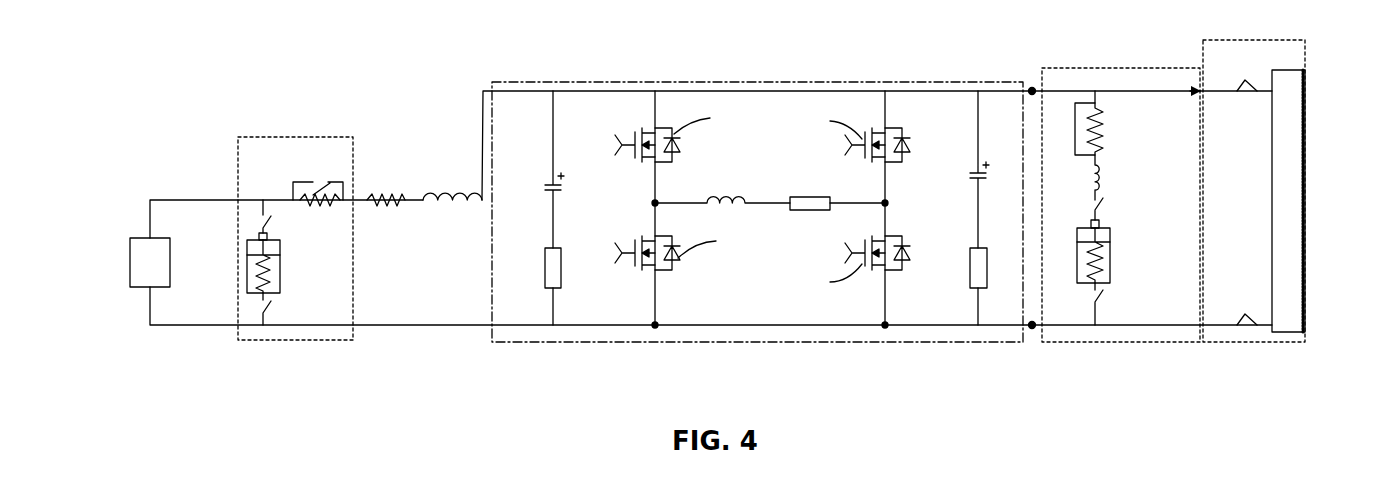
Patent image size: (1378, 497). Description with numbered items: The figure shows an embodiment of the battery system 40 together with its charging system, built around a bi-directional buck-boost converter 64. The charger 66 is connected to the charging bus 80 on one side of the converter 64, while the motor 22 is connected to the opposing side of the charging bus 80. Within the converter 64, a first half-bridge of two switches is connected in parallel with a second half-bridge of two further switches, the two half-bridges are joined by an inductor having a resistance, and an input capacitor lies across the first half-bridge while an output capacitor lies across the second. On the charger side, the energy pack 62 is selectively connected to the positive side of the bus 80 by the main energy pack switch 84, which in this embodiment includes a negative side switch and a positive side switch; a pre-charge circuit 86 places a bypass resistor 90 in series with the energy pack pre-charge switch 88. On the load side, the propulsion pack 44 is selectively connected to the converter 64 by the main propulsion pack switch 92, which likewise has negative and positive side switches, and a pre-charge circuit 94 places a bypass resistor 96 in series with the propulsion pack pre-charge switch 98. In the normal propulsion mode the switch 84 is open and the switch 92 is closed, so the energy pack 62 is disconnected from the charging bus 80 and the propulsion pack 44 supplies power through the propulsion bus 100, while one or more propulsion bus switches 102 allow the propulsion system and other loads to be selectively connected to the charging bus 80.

The motor 22 is at (1292, 192).
The battery system 40 is at (252, 354).
The propulsion pack 44 is at (1078, 250).
The energy pack 62 is at (247, 268).
The bi-directional buck-boost converter 64 is at (746, 80).
The charger 66 is at (147, 262).
The charging bus 80 is at (455, 327).
The main energy pack switch 84 is at (264, 226).
The pre-charge circuit 86 is at (250, 152).
The energy pack pre-charge switch 88 is at (320, 186).
The bypass resistor 90 is at (335, 204).
The main propulsion pack switch 92 is at (1095, 208).
The pre-charge circuit 94 is at (1122, 70).
The bypass resistor 96 is at (1105, 128).
The propulsion pack pre-charge switch 98 is at (1072, 128).
The propulsion bus 100 is at (1250, 90).
The propulsion bus switches 102 is at (1240, 88).